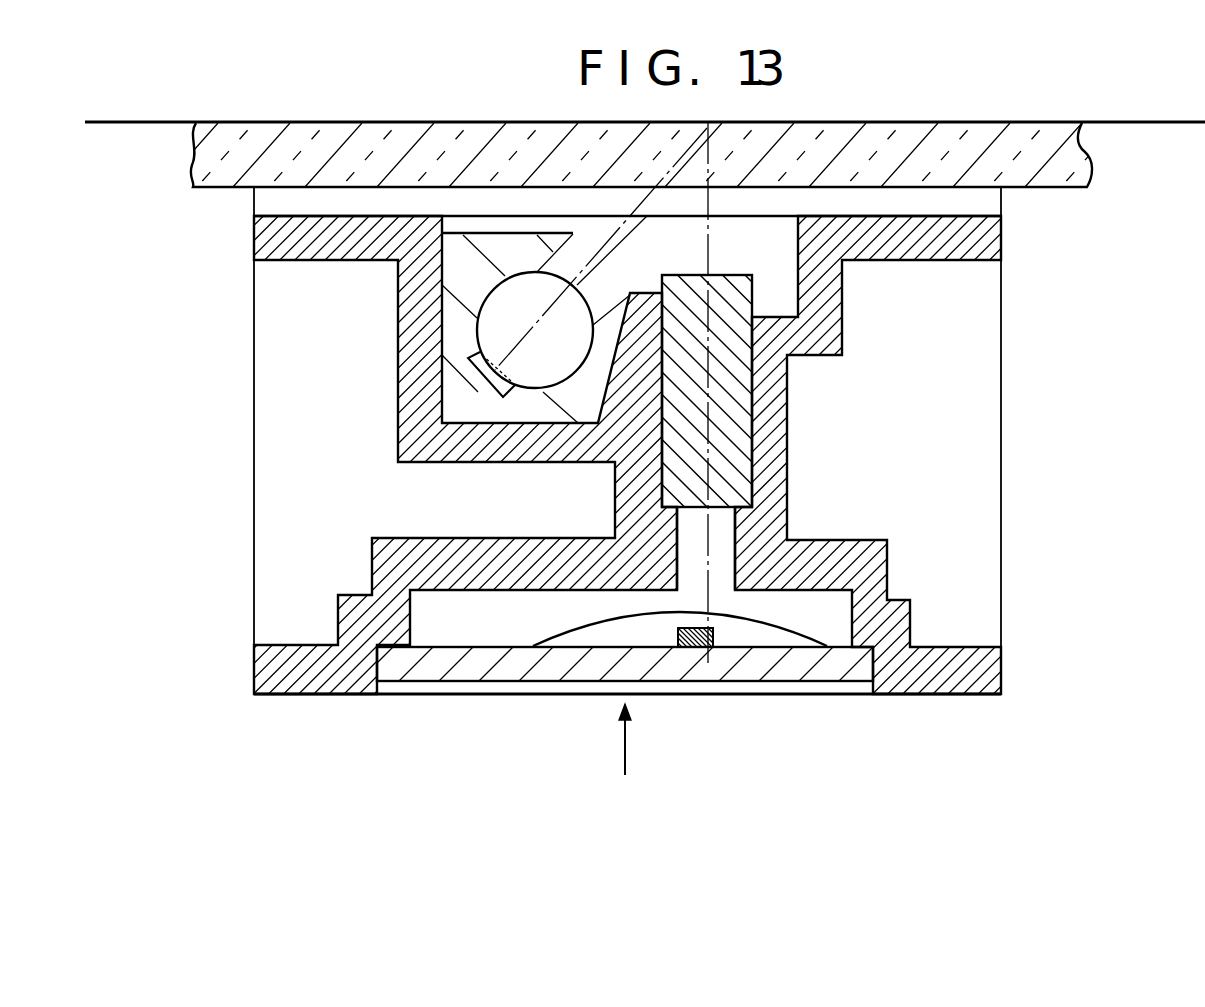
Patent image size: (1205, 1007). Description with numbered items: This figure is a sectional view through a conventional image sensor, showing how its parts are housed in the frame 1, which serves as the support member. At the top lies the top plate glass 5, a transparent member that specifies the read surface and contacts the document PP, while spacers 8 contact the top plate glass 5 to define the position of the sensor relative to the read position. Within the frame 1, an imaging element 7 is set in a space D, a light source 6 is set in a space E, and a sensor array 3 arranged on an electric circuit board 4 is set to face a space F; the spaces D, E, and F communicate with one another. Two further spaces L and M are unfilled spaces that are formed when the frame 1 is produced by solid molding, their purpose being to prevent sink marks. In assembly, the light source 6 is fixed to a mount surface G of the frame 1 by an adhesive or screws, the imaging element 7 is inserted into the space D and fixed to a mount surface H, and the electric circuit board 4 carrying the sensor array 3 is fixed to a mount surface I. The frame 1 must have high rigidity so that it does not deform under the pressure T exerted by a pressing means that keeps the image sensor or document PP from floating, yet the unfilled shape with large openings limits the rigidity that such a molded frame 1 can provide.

The document PP is at (1165, 122).
The top plate glass 5 is at (1082, 153).
The spacer 8 is at (990, 203).
The unfilled space L is at (337, 483).
The unfilled space M is at (923, 525).
The frame 1 is at (272, 675).
The space E is at (493, 225).
The space D is at (747, 402).
The imaging element 7 is at (737, 313).
The mount surface H is at (747, 482).
The light source 6 is at (453, 322).
The mount surface G is at (503, 423).
The electric circuit board 4 is at (758, 670).
The mount surface I is at (867, 652).
The sensor array 3 is at (683, 650).
The space F is at (825, 617).
The pressure T is at (625, 761).